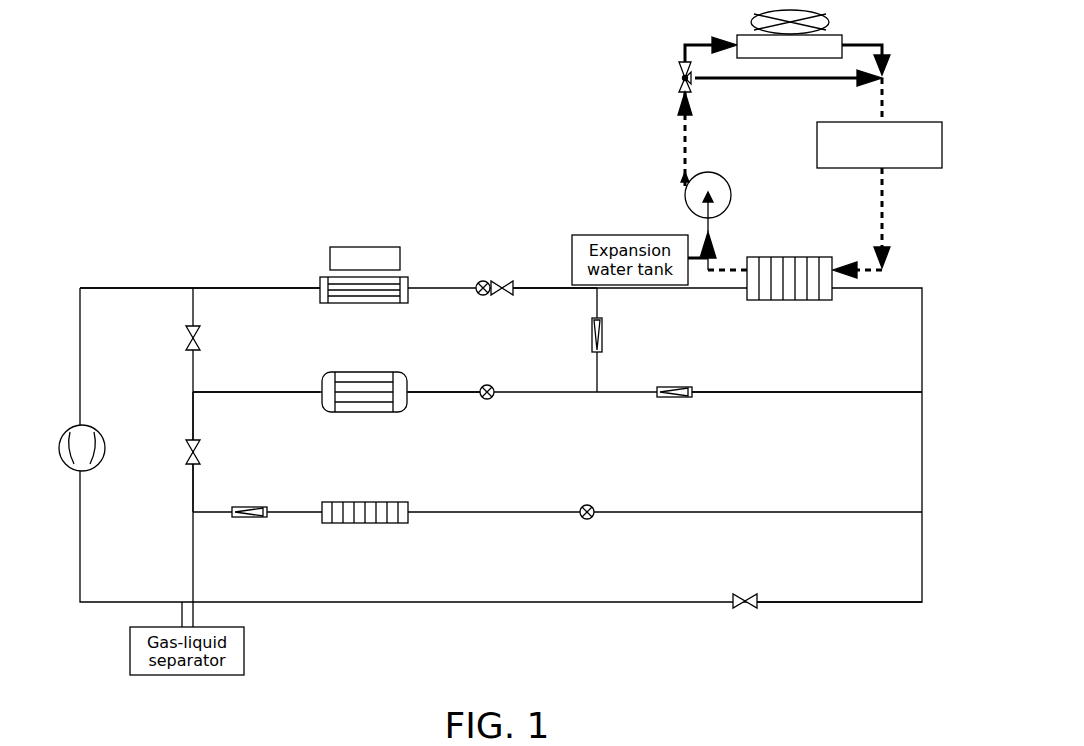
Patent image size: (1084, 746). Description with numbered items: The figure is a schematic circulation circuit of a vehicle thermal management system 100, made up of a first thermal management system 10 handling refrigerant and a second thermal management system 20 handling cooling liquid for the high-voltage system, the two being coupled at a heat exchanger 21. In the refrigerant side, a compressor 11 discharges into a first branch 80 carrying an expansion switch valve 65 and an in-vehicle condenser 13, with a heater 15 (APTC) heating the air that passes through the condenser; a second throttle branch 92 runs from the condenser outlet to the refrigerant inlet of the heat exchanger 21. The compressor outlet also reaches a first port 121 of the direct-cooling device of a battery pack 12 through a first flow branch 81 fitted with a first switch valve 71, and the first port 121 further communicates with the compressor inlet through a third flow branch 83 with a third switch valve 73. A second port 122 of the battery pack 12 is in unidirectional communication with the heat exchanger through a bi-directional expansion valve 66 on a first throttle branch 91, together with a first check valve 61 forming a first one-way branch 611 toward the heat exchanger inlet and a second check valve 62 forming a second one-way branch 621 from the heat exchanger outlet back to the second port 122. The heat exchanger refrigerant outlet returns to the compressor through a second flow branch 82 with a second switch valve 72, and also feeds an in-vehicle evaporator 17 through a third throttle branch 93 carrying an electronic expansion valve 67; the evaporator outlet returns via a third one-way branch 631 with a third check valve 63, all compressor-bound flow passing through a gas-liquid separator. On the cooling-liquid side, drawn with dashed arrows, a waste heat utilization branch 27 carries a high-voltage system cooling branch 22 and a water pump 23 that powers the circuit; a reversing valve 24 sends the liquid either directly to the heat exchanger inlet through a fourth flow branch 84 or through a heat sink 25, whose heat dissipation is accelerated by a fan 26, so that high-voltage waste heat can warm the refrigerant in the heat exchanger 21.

The vehicle thermal management system 100 is at (427, 39).
The first thermal management system 10 is at (266, 248).
The compressor 11 is at (92, 440).
The battery pack 12 is at (398, 404).
The first port 121 is at (318, 378).
The second port 122 is at (411, 377).
The in-vehicle condenser 13 is at (404, 278).
The heater 15 is at (348, 246).
The in-vehicle evaporator 17 is at (402, 518).
The second thermal management system 20 is at (884, 34).
The heat exchanger 21 is at (820, 262).
The high-voltage system cooling branch 22 is at (866, 121).
The water pump 23 is at (726, 180).
The reversing valve 24 is at (676, 78).
The heat sink 25 is at (745, 44).
The fan 26 is at (822, 26).
The waste heat utilization branch 27 is at (890, 205).
The first check valve 61 is at (592, 336).
The first one-way branch 611 is at (596, 364).
The second check valve 62 is at (672, 388).
The second one-way branch 621 is at (750, 390).
The third check valve 63 is at (268, 515).
The third one-way branch 631 is at (288, 510).
The expansion switch valve 65 is at (498, 282).
The bi-directional expansion valve 66 is at (494, 398).
The electronic expansion valve 67 is at (592, 518).
The first switch valve 71 is at (202, 344).
The second switch valve 72 is at (745, 598).
The third switch valve 73 is at (202, 458).
The first branch 80 is at (228, 282).
The first flow branch 81 is at (190, 376).
The second flow branch 82 is at (800, 600).
The third flow branch 83 is at (192, 425).
The fourth flow branch 84 is at (760, 84).
The first throttle branch 91 is at (545, 395).
The second throttle branch 92 is at (554, 285).
The third throttle branch 93 is at (632, 515).